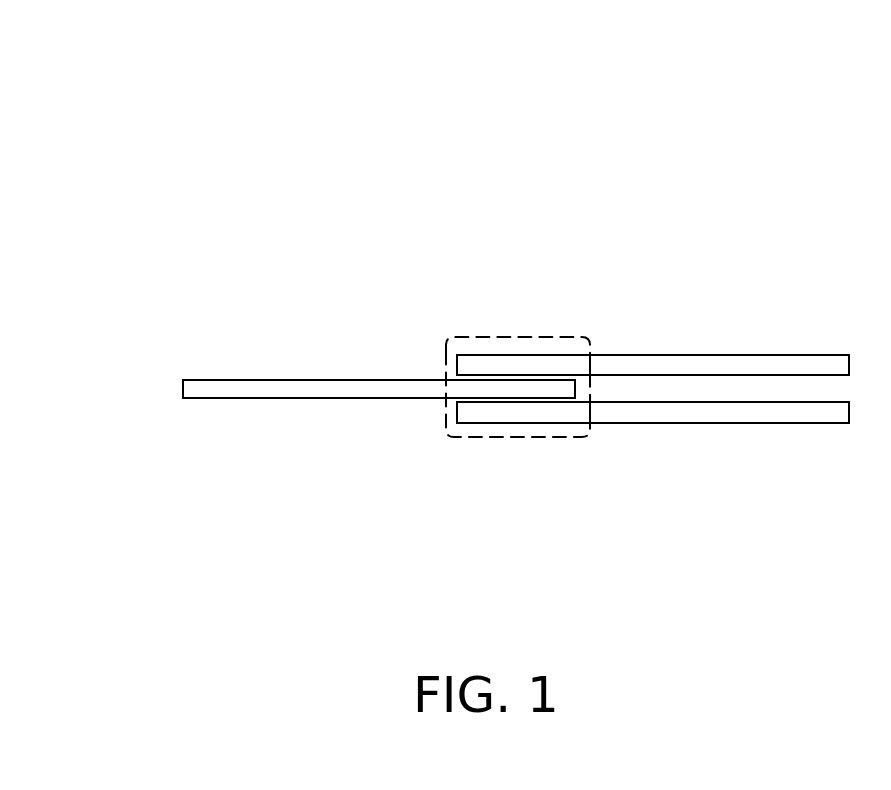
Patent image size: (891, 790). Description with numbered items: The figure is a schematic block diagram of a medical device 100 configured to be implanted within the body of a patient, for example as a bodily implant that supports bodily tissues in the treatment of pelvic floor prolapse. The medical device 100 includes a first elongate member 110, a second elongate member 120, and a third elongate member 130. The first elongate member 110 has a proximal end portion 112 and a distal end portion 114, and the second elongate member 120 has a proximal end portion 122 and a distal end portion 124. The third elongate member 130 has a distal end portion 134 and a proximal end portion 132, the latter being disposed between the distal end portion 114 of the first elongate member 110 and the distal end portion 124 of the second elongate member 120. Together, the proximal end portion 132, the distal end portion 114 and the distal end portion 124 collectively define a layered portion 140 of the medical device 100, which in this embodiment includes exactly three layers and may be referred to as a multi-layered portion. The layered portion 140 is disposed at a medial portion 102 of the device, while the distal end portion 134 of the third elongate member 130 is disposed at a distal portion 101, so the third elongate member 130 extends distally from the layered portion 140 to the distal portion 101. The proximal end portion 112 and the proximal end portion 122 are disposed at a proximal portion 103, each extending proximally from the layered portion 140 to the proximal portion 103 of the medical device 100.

The medical device 100 is at (361, 92).
The distal portion 101 is at (177, 264).
The medial portion 102 is at (538, 179).
The proximal portion 103 is at (824, 200).
The first elongate member 110 is at (643, 363).
The proximal end portion 112 is at (805, 324).
The distal end portion 114 is at (497, 327).
The second elongate member 120 is at (693, 412).
The proximal end portion 122 is at (794, 456).
The distal end portion 124 is at (519, 450).
The third elongate member 130 is at (242, 388).
The proximal end portion 132 is at (433, 360).
The distal end portion 134 is at (222, 350).
The layered portion 140 is at (453, 434).